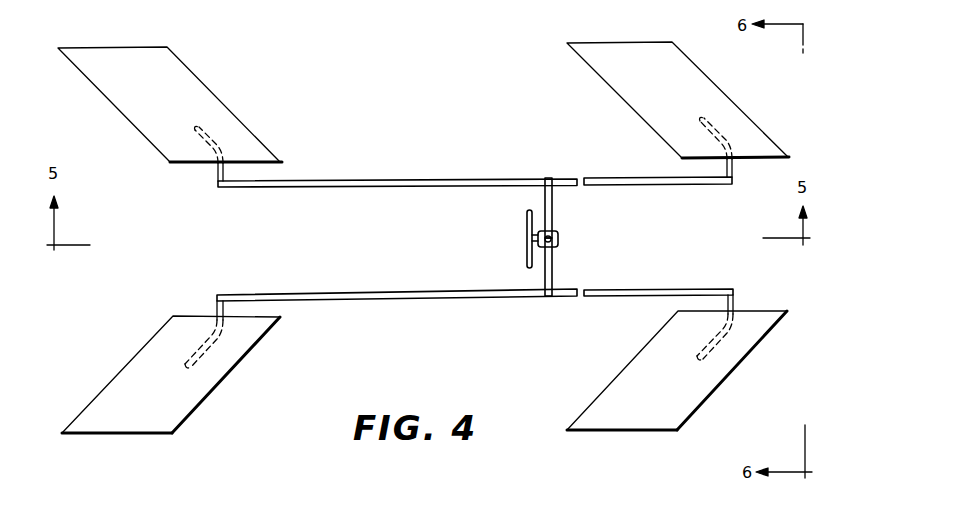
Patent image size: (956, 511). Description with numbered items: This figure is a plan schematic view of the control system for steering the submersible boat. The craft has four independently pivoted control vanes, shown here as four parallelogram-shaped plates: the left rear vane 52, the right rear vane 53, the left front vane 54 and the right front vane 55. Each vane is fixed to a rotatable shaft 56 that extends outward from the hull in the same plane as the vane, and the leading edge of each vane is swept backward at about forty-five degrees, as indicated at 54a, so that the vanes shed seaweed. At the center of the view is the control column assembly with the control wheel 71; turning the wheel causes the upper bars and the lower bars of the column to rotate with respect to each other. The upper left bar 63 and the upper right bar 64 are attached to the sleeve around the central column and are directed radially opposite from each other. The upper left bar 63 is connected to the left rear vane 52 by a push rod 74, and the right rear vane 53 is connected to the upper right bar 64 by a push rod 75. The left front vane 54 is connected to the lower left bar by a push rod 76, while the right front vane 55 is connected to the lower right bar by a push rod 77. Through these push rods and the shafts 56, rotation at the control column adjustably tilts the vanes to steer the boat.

The left rear vane 52 is at (162, 119).
The right rear vane 53 is at (143, 401).
The left front vane 54 is at (662, 111).
The right front vane 55 is at (640, 401).
The swept-back leading edge 54a is at (423, 237).
The rotatable shaft 56 is at (216, 178).
The upper left bar 63 is at (548, 178).
The upper right bar 64 is at (549, 297).
The control wheel 71 is at (527, 237).
The push rod 74 is at (423, 180).
The push rod 75 is at (416, 300).
The push rod 76 is at (610, 178).
The push rod 77 is at (623, 296).